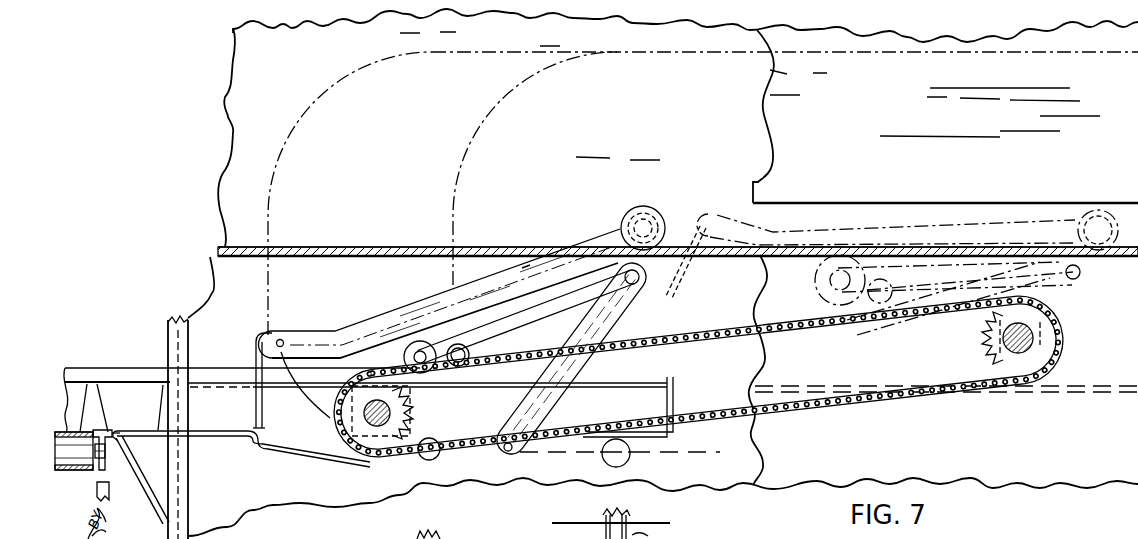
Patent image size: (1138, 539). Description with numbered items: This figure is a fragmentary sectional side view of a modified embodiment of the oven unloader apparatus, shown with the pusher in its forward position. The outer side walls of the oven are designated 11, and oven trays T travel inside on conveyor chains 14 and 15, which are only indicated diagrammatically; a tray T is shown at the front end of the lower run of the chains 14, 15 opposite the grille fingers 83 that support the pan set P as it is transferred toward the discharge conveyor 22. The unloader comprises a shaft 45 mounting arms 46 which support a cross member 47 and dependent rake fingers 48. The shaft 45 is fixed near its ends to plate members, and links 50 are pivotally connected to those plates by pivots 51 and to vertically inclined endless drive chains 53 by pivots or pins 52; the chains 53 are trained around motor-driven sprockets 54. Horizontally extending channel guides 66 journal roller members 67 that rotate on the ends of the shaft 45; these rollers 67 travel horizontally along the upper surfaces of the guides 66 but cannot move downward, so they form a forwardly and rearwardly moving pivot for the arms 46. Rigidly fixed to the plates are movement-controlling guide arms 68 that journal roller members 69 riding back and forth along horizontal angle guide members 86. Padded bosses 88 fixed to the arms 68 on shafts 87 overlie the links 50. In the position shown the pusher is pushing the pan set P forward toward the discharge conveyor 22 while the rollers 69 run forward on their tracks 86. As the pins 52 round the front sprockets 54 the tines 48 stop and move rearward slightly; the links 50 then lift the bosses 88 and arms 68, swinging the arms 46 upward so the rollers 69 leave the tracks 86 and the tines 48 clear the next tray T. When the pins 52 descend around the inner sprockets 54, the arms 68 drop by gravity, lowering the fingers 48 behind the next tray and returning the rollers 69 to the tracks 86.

The outer side wall of the oven 11 is at (225, 97).
The conveyor chain 14 is at (272, 192).
The conveyor chain 15 is at (452, 190).
The channel guide 66 is at (333, 246).
The arm 46 is at (363, 328).
The roller member 67 is at (642, 208).
The shaft 45 is at (665, 222).
The rake finger 48 is at (255, 338).
The cross member 47 is at (280, 339).
The guide arm 68 is at (527, 258).
The roller member 69 is at (406, 327).
The shaft 87 is at (440, 352).
The padded boss 88 is at (486, 385).
The link 50 is at (613, 310).
The pivot 51 is at (641, 278).
The pivot 52 is at (506, 452).
The pan set P is at (124, 392).
The angle guide member 86 is at (627, 383).
The endless drive chain 53 is at (862, 398).
The sprocket 54 is at (388, 458).
The grille finger 83 is at (248, 448).
The discharge conveyor 22 is at (73, 477).
The oven tray T is at (652, 440).